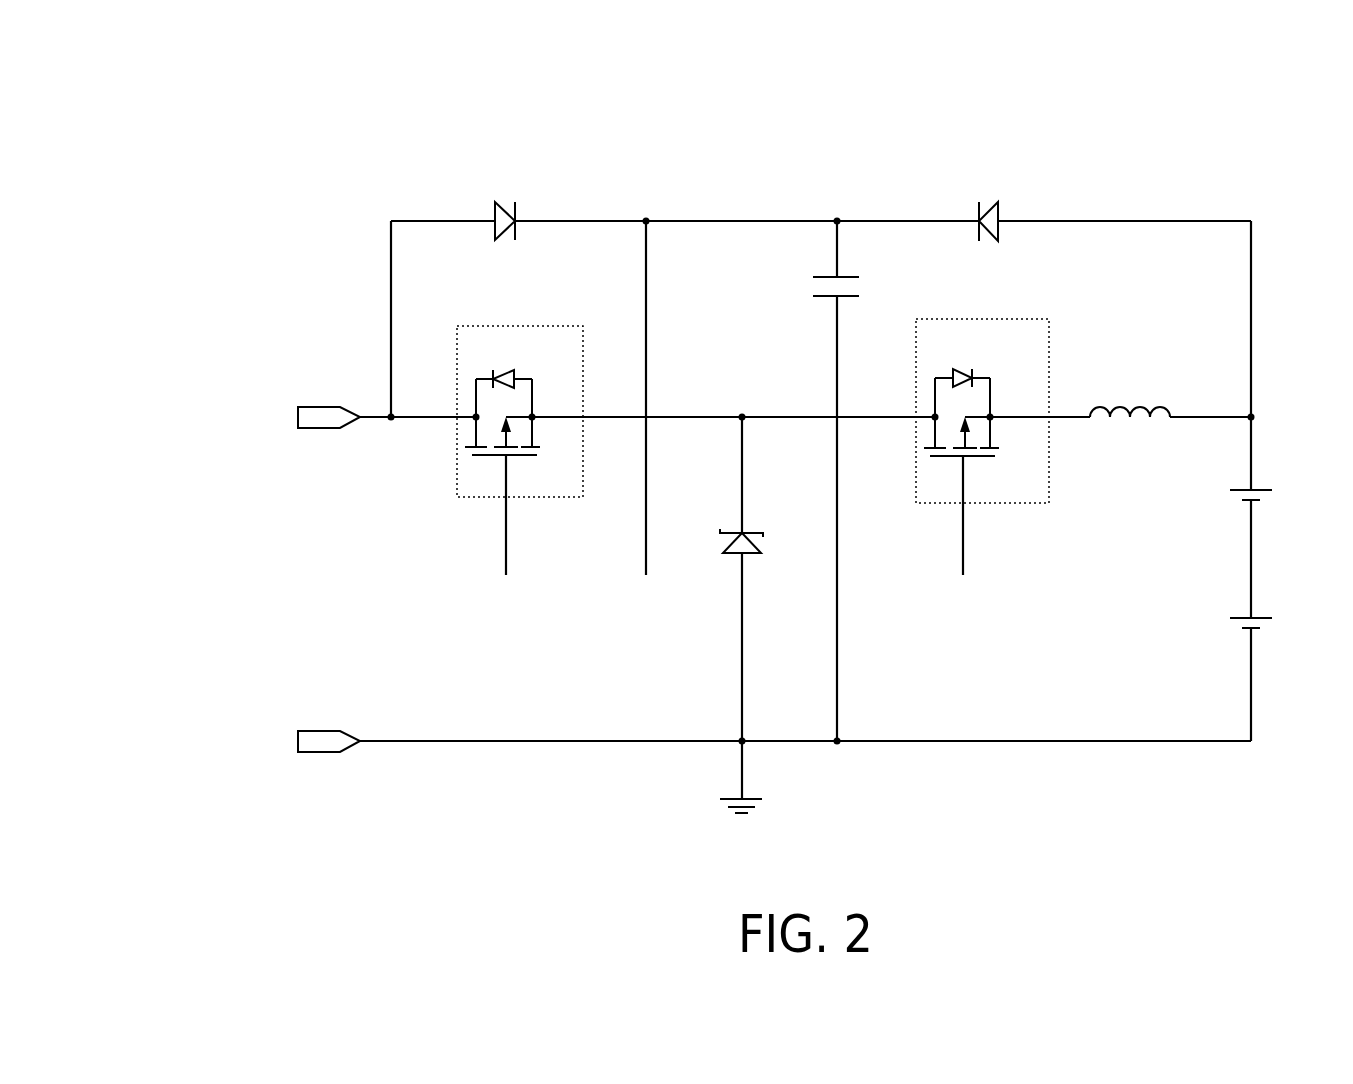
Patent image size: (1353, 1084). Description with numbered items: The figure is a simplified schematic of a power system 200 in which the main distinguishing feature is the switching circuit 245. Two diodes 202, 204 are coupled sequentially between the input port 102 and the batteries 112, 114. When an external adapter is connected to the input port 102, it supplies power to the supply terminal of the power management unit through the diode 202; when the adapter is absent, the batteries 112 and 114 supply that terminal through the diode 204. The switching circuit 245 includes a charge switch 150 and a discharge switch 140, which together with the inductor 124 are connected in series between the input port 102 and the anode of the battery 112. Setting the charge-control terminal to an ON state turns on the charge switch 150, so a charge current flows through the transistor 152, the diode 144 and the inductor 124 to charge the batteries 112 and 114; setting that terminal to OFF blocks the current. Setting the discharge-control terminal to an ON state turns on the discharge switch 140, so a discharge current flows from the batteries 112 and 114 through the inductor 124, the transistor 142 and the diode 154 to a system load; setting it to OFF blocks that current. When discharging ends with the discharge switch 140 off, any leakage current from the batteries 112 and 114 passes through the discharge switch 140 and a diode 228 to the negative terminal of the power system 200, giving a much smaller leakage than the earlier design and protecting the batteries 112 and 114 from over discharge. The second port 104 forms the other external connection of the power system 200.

The power system 200 is at (252, 146).
The input port 102 is at (333, 406).
The second input terminal 104 is at (331, 730).
The diode 202 is at (500, 203).
The diode 204 is at (992, 204).
The charge switch 150 is at (520, 389).
The transistor 152 is at (512, 457).
The diode 154 is at (497, 370).
The discharge switch 140 is at (997, 389).
The transistor 142 is at (975, 458).
The diode 144 is at (960, 369).
The inductor 124 is at (1120, 404).
The battery 112 is at (1243, 489).
The battery 114 is at (1243, 617).
The diode 228 is at (762, 551).
The switching circuit 245 is at (424, 466).